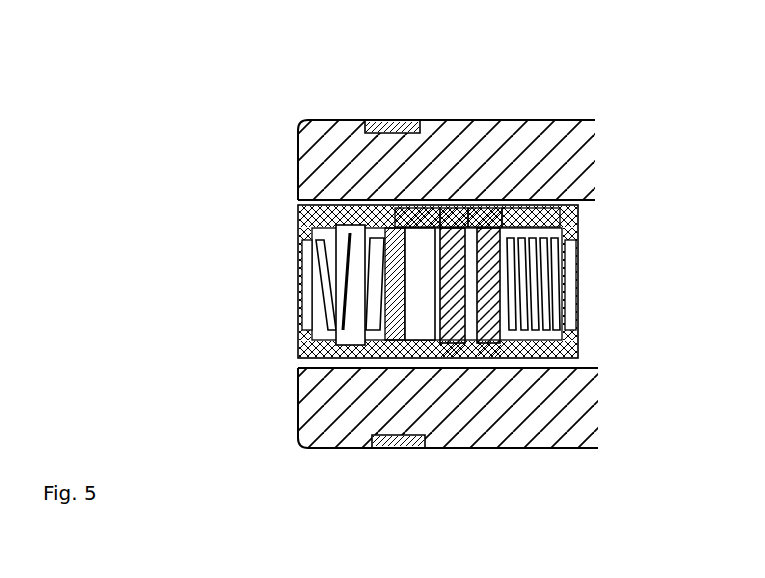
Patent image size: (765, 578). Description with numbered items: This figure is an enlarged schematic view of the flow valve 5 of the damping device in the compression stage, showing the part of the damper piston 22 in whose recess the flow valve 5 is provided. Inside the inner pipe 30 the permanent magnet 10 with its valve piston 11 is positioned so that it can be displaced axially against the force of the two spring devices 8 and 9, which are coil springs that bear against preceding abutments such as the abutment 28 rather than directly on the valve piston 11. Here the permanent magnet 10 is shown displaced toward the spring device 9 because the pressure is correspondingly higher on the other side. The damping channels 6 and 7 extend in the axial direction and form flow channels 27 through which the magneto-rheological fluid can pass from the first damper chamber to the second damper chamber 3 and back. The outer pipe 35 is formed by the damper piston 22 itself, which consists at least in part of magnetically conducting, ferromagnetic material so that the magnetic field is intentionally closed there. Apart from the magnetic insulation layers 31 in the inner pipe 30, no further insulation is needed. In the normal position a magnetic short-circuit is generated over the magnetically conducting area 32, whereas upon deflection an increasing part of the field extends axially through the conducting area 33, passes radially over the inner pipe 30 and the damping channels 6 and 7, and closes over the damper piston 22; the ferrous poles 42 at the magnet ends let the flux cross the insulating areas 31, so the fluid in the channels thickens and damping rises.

The second damper chamber 3 is at (548, 133).
The flow valve 5 is at (278, 250).
The damping channel 6 is at (300, 205).
The damping channel 7 is at (300, 366).
The spring device 8 is at (305, 263).
The spring device 9 is at (565, 268).
The permanent magnet 10 is at (470, 343).
The valve piston 11 is at (467, 228).
The damper piston 22 is at (300, 155).
The flow channel 27 is at (330, 372).
The abutment 28 is at (392, 372).
The inner pipe 30 is at (590, 355).
The magnetic insulation layer 31 is at (405, 204).
The magnetically conducting area 32 is at (455, 205).
The magnetically conducting area 33 is at (503, 205).
The outer pipe 35 is at (592, 405).
The ferrous pole 42 is at (458, 360).